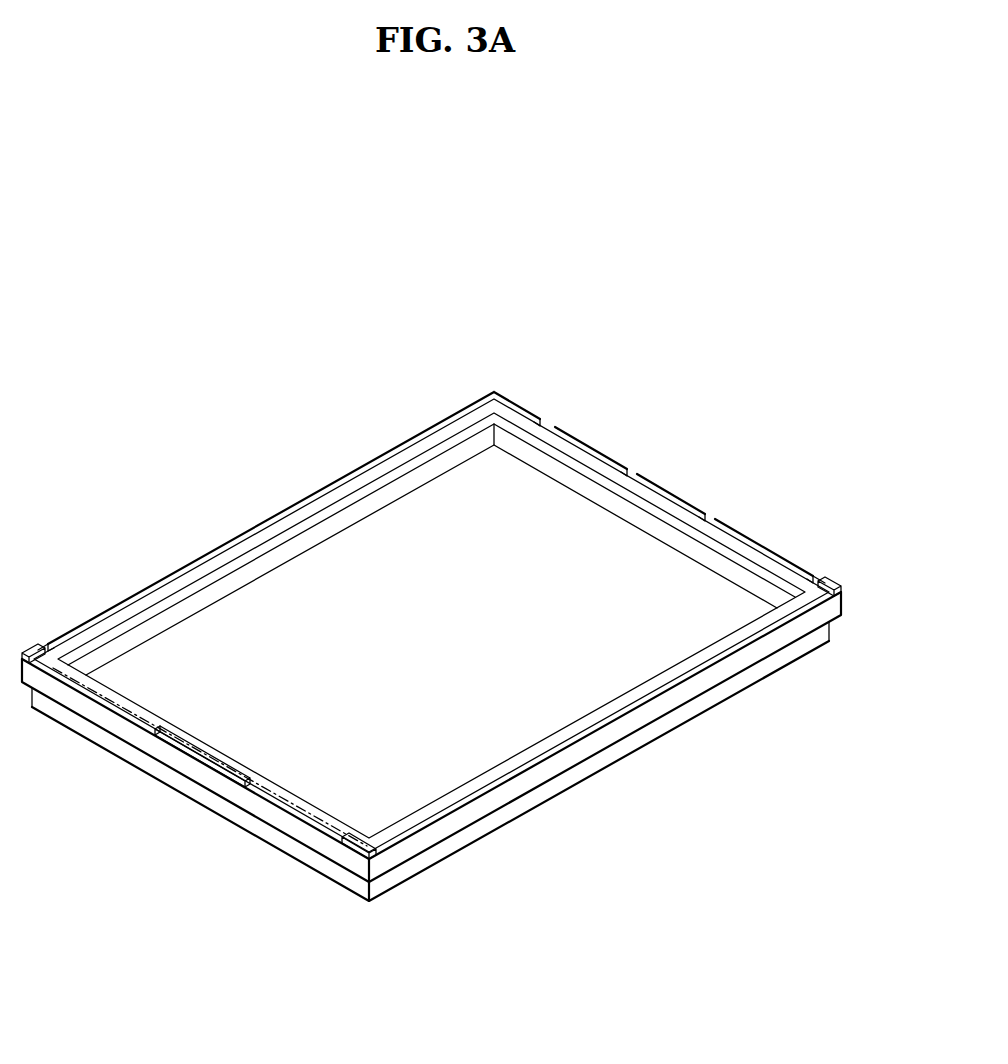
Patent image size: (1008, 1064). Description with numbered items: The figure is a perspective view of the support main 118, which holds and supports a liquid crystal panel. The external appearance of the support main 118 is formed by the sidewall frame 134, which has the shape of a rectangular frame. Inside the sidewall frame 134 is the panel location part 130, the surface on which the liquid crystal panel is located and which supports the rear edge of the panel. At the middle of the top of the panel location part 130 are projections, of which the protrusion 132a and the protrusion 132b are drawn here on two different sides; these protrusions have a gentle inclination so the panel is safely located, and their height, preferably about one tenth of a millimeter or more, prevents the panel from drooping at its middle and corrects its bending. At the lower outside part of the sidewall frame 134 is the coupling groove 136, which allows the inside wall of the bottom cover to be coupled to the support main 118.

The support main 118 is at (200, 322).
The panel location part 130 is at (548, 436).
The protrusion 132a is at (652, 496).
The protrusion 132b is at (208, 748).
The sidewall frame 134 is at (823, 612).
The coupling groove 136 is at (793, 652).